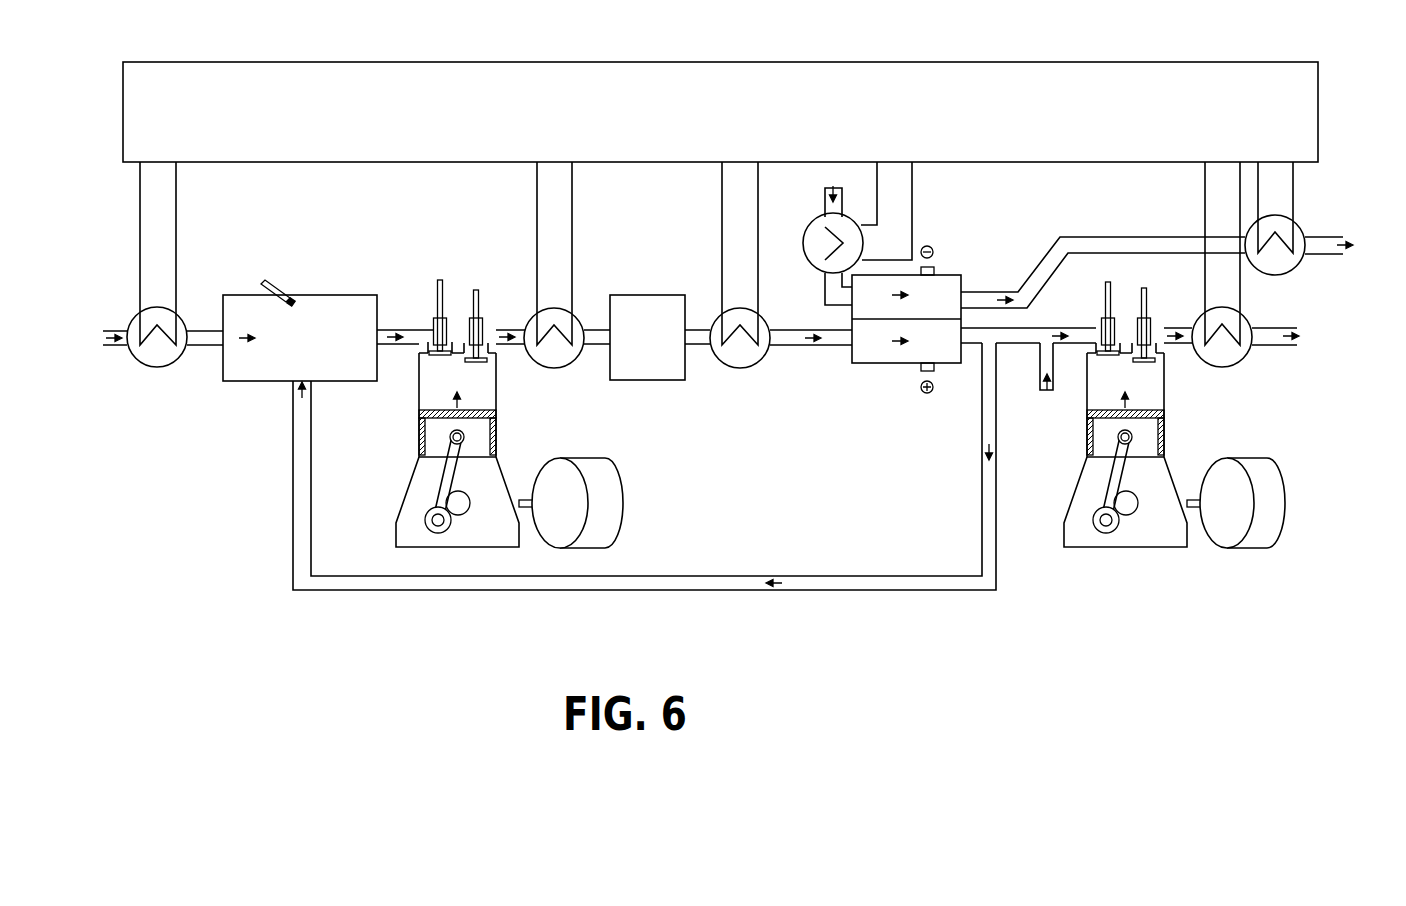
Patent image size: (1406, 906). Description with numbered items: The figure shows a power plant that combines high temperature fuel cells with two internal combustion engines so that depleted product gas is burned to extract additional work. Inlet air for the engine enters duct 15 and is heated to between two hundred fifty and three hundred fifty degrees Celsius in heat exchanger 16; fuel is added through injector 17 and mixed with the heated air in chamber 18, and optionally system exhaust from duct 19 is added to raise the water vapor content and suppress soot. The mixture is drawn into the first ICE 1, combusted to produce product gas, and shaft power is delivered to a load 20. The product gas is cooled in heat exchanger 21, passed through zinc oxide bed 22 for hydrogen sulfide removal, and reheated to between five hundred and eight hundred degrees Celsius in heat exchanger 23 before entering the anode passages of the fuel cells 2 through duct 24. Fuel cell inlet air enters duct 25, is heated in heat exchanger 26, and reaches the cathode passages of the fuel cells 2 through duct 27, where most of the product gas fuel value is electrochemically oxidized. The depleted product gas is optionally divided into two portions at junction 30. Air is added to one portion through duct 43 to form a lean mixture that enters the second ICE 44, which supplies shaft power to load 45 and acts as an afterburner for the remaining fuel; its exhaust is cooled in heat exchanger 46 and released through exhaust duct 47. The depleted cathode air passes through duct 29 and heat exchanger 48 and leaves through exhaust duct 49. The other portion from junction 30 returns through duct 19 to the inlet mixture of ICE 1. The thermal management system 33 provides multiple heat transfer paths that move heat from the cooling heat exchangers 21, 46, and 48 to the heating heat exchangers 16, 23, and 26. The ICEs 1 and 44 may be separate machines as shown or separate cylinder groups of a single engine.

The first ICE 1 is at (418, 418).
The fuel cells 2 is at (890, 372).
The duct 15 is at (107, 345).
The heat exchanger 16 is at (168, 315).
The injector 17 is at (278, 278).
The chamber 18 is at (266, 372).
The duct 19 is at (800, 580).
The load 20 is at (598, 477).
The heat exchanger 21 is at (563, 315).
The zinc oxide bed 22 is at (634, 300).
The heat exchanger 23 is at (741, 352).
The duct 24 is at (792, 345).
The duct 25 is at (838, 199).
The heat exchanger 26 is at (813, 232).
The duct 27 is at (827, 293).
The duct 29 is at (1083, 203).
The junction 30 is at (985, 347).
The thermal management system 33 is at (635, 83).
The duct 43 is at (1044, 406).
The second ICE 44 is at (1087, 543).
The load 45 is at (1257, 430).
The heat exchanger 46 is at (1243, 325).
The exhaust duct 47 is at (1278, 347).
The heat exchanger 48 is at (1293, 228).
The exhaust duct 49 is at (1348, 222).